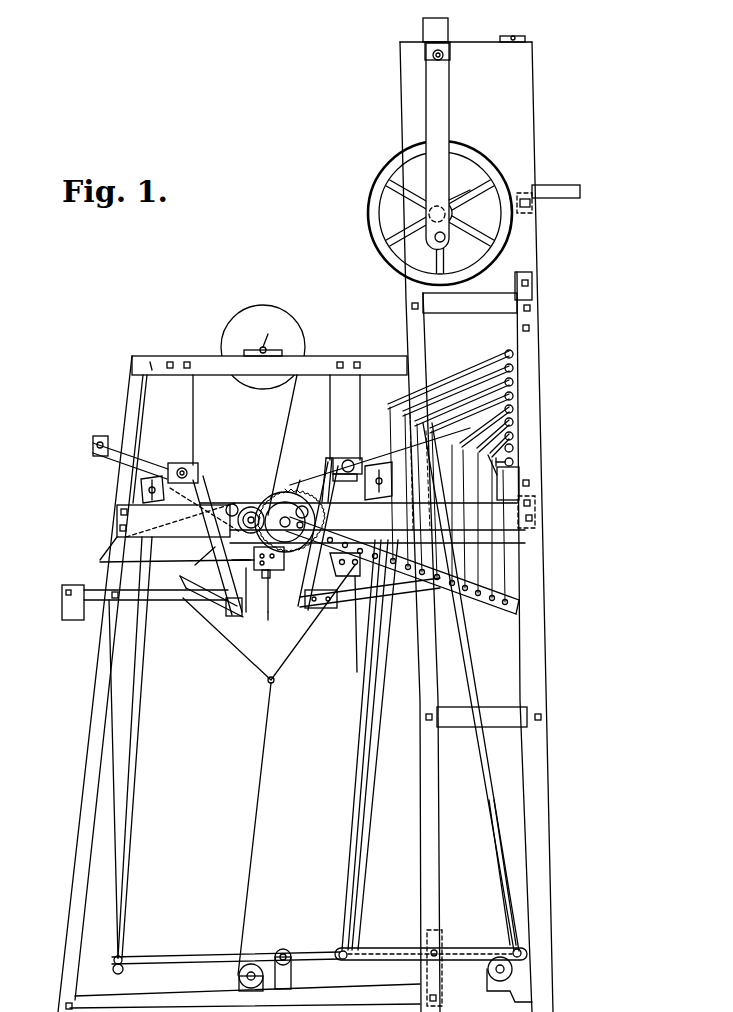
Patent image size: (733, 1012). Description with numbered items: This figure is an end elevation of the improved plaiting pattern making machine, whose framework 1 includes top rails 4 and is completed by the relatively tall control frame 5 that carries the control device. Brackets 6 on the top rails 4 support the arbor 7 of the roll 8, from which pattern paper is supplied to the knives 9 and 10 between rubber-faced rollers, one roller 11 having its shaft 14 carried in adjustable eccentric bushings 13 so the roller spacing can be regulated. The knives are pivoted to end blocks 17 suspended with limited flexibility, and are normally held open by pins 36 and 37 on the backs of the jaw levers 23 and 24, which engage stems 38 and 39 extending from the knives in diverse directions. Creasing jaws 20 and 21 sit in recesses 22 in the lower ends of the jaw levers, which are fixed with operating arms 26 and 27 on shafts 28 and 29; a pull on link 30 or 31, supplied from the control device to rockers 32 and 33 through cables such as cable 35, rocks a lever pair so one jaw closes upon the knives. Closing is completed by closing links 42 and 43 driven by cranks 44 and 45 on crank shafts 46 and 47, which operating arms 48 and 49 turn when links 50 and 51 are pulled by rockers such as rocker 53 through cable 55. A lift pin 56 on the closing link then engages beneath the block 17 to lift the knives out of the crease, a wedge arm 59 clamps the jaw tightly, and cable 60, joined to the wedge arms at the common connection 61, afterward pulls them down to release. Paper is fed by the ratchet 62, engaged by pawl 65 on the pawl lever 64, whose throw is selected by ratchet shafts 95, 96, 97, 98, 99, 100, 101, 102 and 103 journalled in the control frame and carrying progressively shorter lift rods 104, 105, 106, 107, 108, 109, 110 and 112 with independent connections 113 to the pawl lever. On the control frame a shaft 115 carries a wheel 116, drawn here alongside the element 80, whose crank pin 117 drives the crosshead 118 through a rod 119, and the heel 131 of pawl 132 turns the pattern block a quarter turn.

The framework 1 is at (128, 372).
The top rails 4 is at (152, 356).
The control frame 5 is at (536, 297).
The brackets 6 is at (279, 350).
The arbor 7 is at (266, 332).
The roll 8 is at (265, 318).
The knife 9 is at (246, 612).
The knife 10 is at (284, 570).
The rubber-faced roller 11 is at (513, 461).
The adjustable eccentric bushings 13 is at (262, 494).
The shaft 14 is at (255, 508).
The end blocks 17 is at (258, 570).
The creasing jaw 20 is at (238, 615).
The creasing jaw 21 is at (338, 590).
The recesses 22 is at (222, 598).
The jaw lever 23 is at (180, 580).
The jaw lever 24 is at (348, 578).
The operating arm 26 is at (140, 492).
The operating arm 27 is at (384, 514).
The shaft 28 is at (230, 504).
The shaft 29 is at (300, 488).
The link 30 is at (146, 668).
The link 31 is at (356, 690).
The rocker 32 is at (226, 954).
The rocker 33 is at (372, 950).
The cable 35 is at (502, 914).
The pin 36 is at (200, 565).
The pin 37 is at (356, 620).
The stem 38 is at (102, 564).
The stem 39 is at (268, 612).
The closing link 42 is at (321, 515).
The closing link 43 is at (312, 470).
The crank 44 is at (188, 465).
The crank 45 is at (326, 455).
The crank shaft 46 is at (196, 462).
The crank shaft 47 is at (348, 458).
The operating arm 48 is at (93, 446).
The operating arm 49 is at (390, 462).
The link 50 is at (112, 534).
The link 51 is at (372, 712).
The rocker 53 is at (420, 964).
The cable 55 is at (496, 908).
The lift pin 56 is at (84, 618).
The wedge arm 59 is at (456, 600).
The cable 60 is at (246, 900).
The common connection 61 is at (236, 645).
The ratchet 62 is at (300, 506).
The pawl lever 64 is at (502, 608).
The pawl 65 is at (344, 514).
The wheel 80 is at (383, 210).
The ratchet shaft 95 is at (513, 352).
The ratchet shaft 96 is at (513, 366).
The ratchet shaft 97 is at (513, 380).
The ratchet shaft 98 is at (513, 408).
The ratchet shaft 99 is at (531, 415).
The ratchet shaft 100 is at (547, 426).
The ratchet shaft 101 is at (555, 437).
The ratchet shaft 102 is at (513, 447).
The ratchet shaft 103 is at (520, 480).
The lift rod 104 is at (492, 358).
The lift rod 105 is at (480, 366).
The lift rod 106 is at (483, 386).
The lift rod 107 is at (513, 394).
The lift rod 108 is at (513, 421).
The lift rod 109 is at (513, 435).
The lift rod 110 is at (538, 512).
The lift rod 112 is at (532, 490).
The independent connections 113 is at (392, 410).
The shaft 115 is at (444, 206).
The wheel 116 is at (470, 190).
The crank pin 117 is at (436, 242).
The crosshead 118 is at (448, 32).
The rod 119 is at (449, 116).
The heel 131 is at (556, 192).
The pawl 132 is at (530, 192).